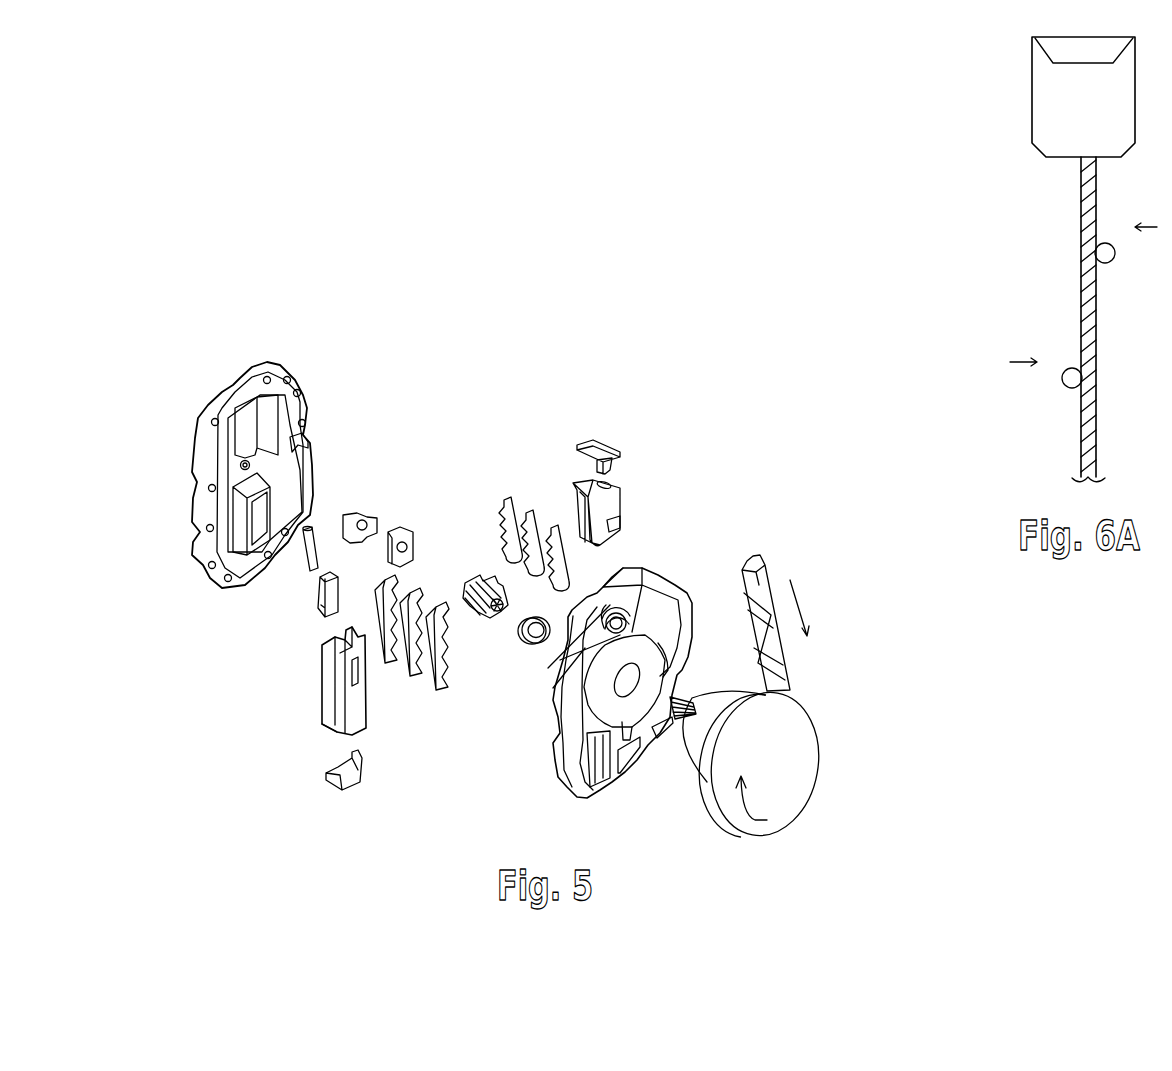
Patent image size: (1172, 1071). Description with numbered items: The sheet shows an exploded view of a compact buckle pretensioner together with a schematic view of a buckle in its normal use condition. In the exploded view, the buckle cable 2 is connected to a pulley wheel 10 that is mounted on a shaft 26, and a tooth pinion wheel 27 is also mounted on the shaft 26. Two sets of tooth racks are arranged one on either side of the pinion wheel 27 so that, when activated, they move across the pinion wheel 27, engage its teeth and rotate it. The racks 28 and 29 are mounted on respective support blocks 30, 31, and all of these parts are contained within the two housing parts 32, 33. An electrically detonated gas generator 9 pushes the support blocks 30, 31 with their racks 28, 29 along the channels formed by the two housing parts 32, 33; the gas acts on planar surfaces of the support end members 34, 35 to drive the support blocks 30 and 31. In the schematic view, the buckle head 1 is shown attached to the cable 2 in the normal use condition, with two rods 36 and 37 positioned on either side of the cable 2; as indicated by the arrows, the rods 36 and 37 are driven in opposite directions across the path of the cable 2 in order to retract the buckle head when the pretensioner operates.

In FIG. 6A, the head block 1 is at (1123, 93).
In FIG. 5, the buckle cable 2 is at (763, 560).
In FIG. 6A, the buckle cable 2 is at (1095, 322).
In FIG. 5, the electrically detonated gas generator 9 is at (612, 612).
In FIG. 5, the pulley wheel 10 is at (815, 727).
In FIG. 5, the shaft 26 is at (686, 699).
In FIG. 5, the tooth pinion wheel 27 is at (491, 623).
In FIG. 5, the racks 28 is at (417, 680).
In FIG. 5, the racks 29 is at (533, 510).
In FIG. 5, the support block 30 is at (327, 706).
In FIG. 5, the support block 31 is at (618, 505).
In FIG. 5, the housing part 32 is at (206, 565).
In FIG. 5, the housing part 33 is at (593, 797).
In FIG. 5, the support end member 34 is at (350, 790).
In FIG. 5, the support end member 35 is at (603, 448).
In FIG. 6A, the rod 36 is at (1116, 253).
In FIG. 6A, the rod 37 is at (1063, 388).